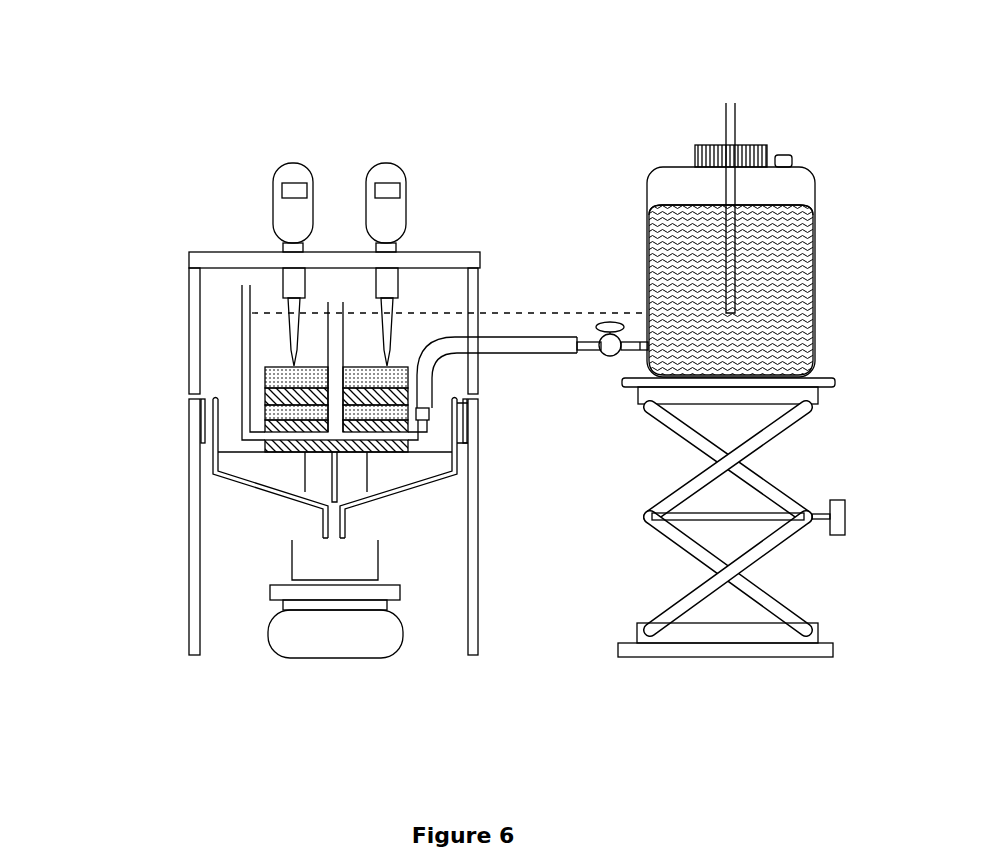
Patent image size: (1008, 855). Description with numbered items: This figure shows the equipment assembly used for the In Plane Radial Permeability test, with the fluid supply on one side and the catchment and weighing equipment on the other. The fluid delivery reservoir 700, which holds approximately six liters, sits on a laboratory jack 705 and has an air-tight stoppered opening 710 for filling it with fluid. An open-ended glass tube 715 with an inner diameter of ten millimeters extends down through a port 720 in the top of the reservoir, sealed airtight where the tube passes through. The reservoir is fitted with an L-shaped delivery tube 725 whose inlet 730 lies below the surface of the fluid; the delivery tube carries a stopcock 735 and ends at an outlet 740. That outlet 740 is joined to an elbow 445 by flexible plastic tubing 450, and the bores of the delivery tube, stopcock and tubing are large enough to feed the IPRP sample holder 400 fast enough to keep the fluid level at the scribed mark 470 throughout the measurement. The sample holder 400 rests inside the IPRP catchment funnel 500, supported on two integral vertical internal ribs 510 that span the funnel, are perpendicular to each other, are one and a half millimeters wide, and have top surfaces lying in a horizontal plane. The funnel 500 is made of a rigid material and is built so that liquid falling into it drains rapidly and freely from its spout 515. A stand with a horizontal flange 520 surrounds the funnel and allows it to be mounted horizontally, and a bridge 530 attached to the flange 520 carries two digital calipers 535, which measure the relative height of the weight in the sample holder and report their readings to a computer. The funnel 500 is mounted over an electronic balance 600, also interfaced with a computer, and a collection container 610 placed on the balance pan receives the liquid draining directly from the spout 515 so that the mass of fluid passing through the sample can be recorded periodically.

The IPRP sample holder 400 is at (269, 357).
The elbow 445 is at (439, 444).
The flexible plastic tubing 450 is at (540, 356).
The scribed mark 470 is at (232, 308).
The IPRP catchment funnel 500 is at (409, 501).
The vertical internal ribs 510 is at (391, 476).
The spout 515 is at (317, 523).
The horizontal flange 520 is at (186, 433).
The bridge 530 is at (237, 247).
The digital calipers 535 is at (390, 146).
The electronic balance 600 is at (337, 663).
The collection container 610 is at (388, 565).
The fluid delivery reservoir 700 is at (680, 200).
The laboratory jack 705 is at (727, 661).
The air-tight stoppered opening 710 is at (788, 141).
The open-ended glass tube 715 is at (717, 182).
The port 720 is at (707, 139).
The L-shaped delivery tube 725 is at (633, 332).
The inlet 730 is at (637, 356).
The stopcock 735 is at (608, 321).
The outlet 740 is at (585, 331).